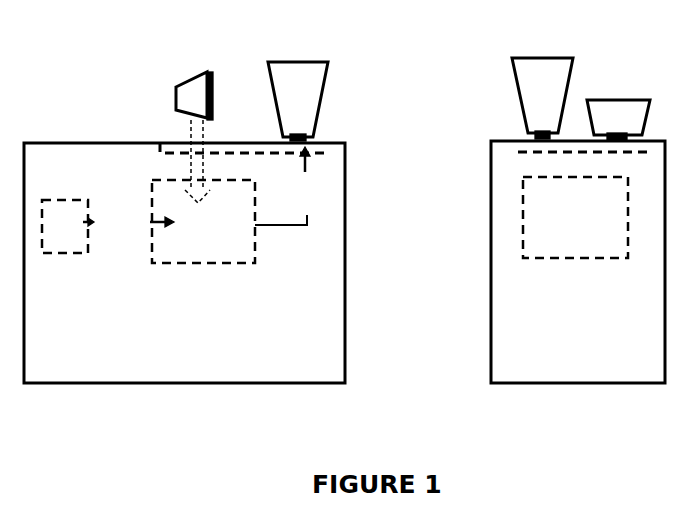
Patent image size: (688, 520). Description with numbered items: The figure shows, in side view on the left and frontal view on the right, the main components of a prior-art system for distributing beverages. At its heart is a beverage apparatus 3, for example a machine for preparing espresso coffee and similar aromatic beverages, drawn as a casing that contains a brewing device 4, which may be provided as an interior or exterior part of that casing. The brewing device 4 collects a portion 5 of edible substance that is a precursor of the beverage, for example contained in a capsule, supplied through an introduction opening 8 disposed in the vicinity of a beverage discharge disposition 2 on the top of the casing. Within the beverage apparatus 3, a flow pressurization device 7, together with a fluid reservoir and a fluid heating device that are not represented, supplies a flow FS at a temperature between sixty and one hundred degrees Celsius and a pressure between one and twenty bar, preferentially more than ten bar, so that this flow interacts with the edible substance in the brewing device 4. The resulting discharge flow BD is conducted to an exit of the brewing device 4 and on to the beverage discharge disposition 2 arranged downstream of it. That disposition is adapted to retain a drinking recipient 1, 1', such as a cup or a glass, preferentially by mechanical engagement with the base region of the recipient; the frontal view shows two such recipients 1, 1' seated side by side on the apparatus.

The drinking recipient 1 is at (420, 82).
The drinking recipient 1' is at (618, 103).
The beverage discharge disposition 2 is at (321, 143).
The beverage apparatus 3 is at (344, 238).
The brewing device 4 is at (390, 191).
The portion of edible substance 5 is at (195, 81).
The flow pressurization device 7 is at (69, 211).
The introduction opening 8 is at (404, 132).
The discharge flow BD is at (292, 186).
The flow FS is at (128, 223).